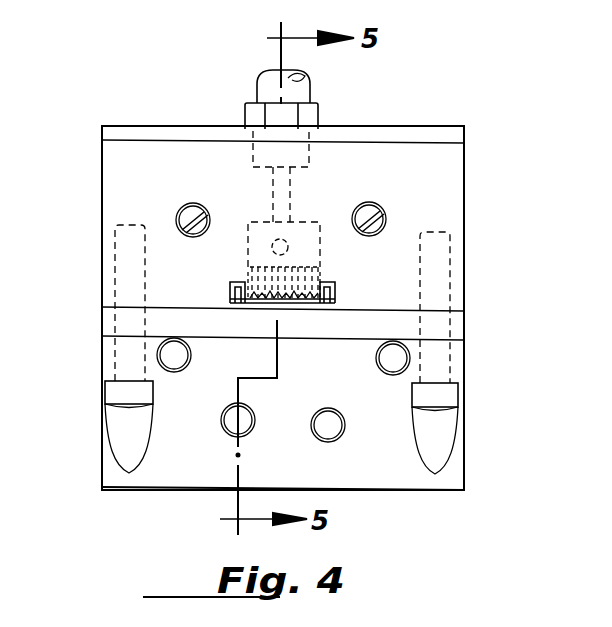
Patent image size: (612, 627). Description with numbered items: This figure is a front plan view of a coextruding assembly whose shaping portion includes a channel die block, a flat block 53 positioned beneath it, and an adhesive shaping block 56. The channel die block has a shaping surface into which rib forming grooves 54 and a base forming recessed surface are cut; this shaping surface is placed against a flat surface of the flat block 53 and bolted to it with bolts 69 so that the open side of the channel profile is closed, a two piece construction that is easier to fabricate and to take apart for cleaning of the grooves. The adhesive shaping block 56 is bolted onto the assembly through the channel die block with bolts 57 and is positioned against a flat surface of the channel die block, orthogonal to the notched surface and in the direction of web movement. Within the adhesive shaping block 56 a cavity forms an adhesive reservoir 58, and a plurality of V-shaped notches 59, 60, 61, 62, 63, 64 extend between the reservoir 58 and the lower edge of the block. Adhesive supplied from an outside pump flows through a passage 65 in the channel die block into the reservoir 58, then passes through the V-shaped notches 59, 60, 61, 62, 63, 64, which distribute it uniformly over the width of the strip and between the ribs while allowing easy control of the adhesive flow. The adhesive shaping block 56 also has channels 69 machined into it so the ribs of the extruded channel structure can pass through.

The flat block 53 is at (160, 470).
The rib forming grooves 54 is at (228, 298).
The adhesive shaping block 56 is at (450, 165).
The bolts 57 is at (178, 214).
The adhesive reservoir 58 is at (313, 222).
The V-shaped notch 59 is at (248, 278).
The V-shaped notch 60 is at (257, 265).
The V-shaped notch 61 is at (288, 312).
The V-shaped notch 62 is at (297, 312).
The V-shaped notch 63 is at (280, 312).
The V-shaped notch 64 is at (323, 267).
The passage 65 is at (273, 193).
The bolts 69 is at (442, 399).